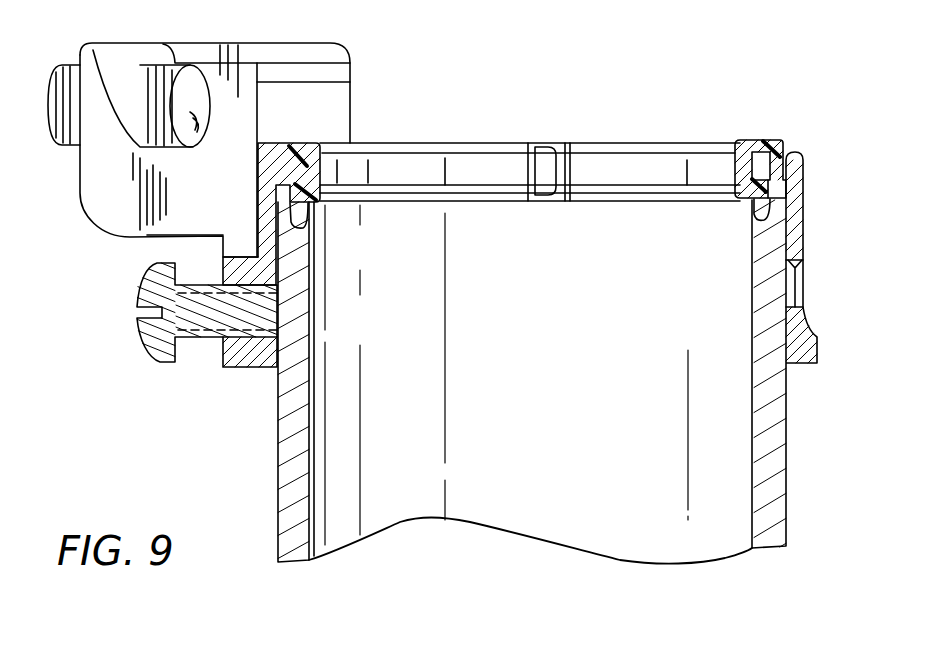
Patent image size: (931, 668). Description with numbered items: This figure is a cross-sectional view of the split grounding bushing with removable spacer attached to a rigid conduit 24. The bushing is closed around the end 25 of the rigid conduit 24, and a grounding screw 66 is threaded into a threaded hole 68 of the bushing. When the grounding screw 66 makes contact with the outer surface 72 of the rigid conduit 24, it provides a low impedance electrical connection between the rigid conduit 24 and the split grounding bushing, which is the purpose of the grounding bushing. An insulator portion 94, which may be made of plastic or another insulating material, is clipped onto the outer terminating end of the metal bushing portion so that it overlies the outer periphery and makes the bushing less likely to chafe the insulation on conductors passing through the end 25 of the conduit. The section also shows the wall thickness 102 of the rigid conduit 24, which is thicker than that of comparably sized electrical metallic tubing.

The rigid conduit 24 is at (791, 428).
The end of the rigid conduit 25 is at (292, 226).
The grounding screw 66 is at (147, 345).
The threaded hole 68 is at (233, 333).
The outer surface of the rigid conduit 72 is at (277, 476).
The insulator portion 94 is at (752, 140).
The wall thickness of the rigid conduit 102 is at (298, 312).